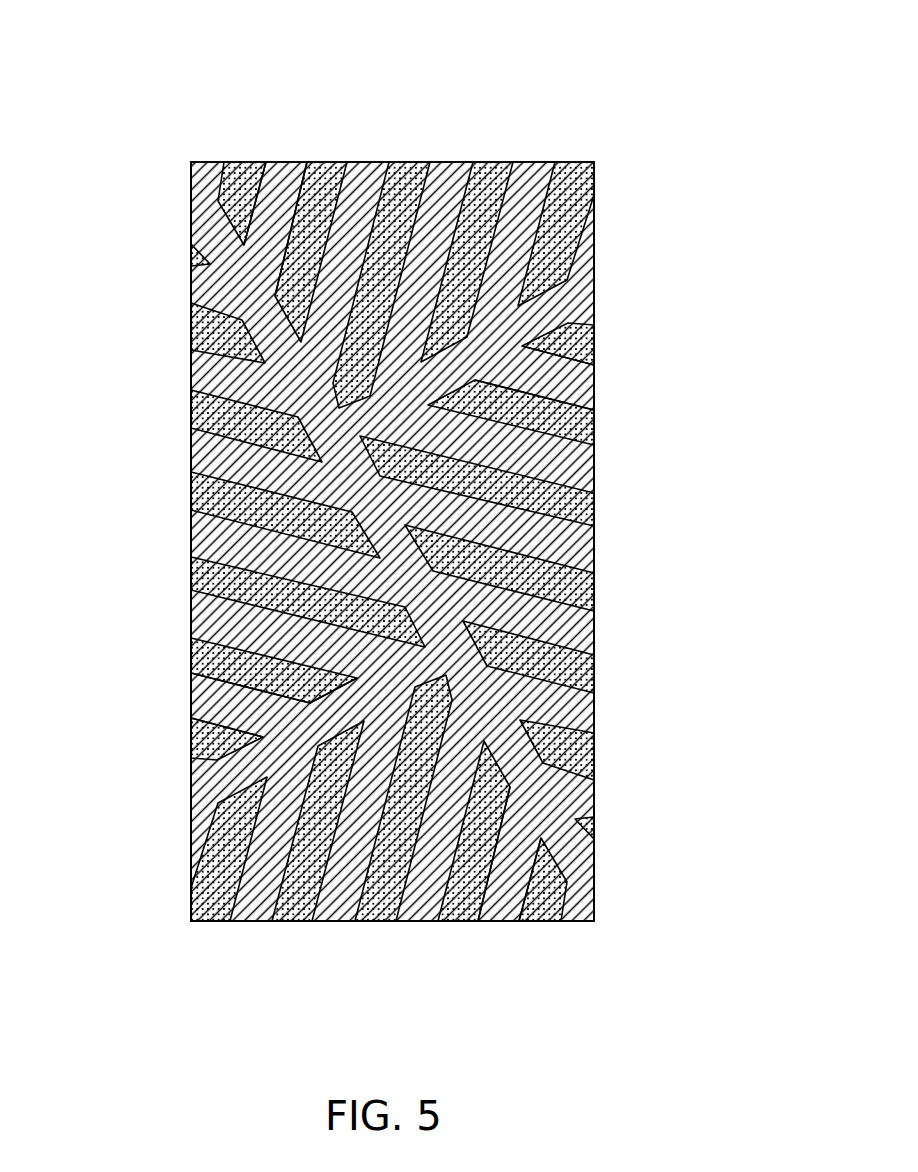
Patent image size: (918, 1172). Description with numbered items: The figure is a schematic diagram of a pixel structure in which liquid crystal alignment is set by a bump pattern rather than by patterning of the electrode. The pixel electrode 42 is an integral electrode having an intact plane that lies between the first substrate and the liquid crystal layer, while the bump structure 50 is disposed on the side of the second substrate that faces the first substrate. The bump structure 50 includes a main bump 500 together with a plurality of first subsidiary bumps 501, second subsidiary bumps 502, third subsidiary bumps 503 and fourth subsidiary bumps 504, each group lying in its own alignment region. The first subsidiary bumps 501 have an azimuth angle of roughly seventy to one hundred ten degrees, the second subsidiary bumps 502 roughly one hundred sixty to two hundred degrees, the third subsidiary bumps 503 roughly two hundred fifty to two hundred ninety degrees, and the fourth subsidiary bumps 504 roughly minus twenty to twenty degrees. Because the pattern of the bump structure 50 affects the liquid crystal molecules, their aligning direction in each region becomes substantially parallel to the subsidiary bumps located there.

The pixel electrode 42 is at (660, 90).
The bump structure 50 is at (182, 180).
The main bump 500 is at (247, 290).
The first subsidiary bumps 501 is at (285, 165).
The second subsidiary bumps 502 is at (207, 700).
The third subsidiary bumps 503 is at (497, 906).
The fourth subsidiary bumps 504 is at (577, 386).